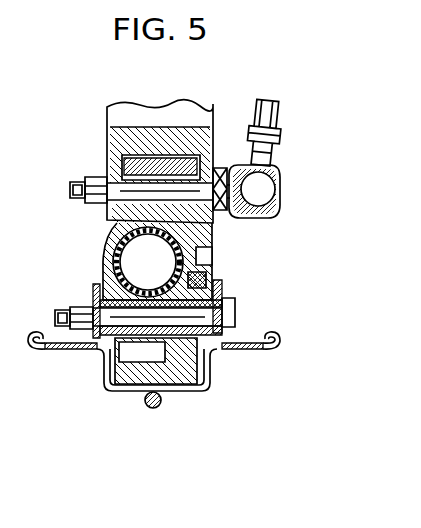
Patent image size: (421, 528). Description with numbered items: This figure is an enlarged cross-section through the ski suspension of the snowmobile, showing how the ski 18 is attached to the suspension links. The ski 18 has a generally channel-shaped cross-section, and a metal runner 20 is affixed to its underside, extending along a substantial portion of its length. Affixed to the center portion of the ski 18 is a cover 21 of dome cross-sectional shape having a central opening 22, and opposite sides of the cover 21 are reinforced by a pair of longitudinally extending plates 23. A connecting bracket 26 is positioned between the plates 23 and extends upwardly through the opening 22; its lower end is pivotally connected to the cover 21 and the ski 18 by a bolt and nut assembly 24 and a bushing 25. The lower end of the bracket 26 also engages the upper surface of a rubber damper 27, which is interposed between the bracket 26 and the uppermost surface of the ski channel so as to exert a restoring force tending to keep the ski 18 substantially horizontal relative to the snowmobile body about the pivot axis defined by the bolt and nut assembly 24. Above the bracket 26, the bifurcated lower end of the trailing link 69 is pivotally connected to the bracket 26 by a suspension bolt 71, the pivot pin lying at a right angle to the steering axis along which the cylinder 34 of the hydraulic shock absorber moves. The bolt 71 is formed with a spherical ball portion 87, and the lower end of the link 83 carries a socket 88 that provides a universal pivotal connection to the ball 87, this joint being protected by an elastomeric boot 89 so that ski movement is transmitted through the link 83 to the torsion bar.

The ski 18 is at (200, 385).
The metal runner 20 is at (157, 408).
The cover 21 is at (228, 280).
The central opening 22 is at (215, 272).
The longitudinally extending plates 23 is at (97, 287).
The bolt and nut assembly 24 is at (236, 315).
The bushing 25 is at (97, 347).
The connecting bracket 26 is at (113, 257).
The rubber damper 27 is at (125, 375).
The cylinder 34 is at (172, 265).
The trailing link 69 is at (110, 140).
The suspension bolt 71 is at (120, 190).
The link 83 is at (279, 113).
The spherical ball portion 87 is at (257, 190).
The socket 88 is at (271, 164).
The elastomeric boot 89 is at (247, 229).